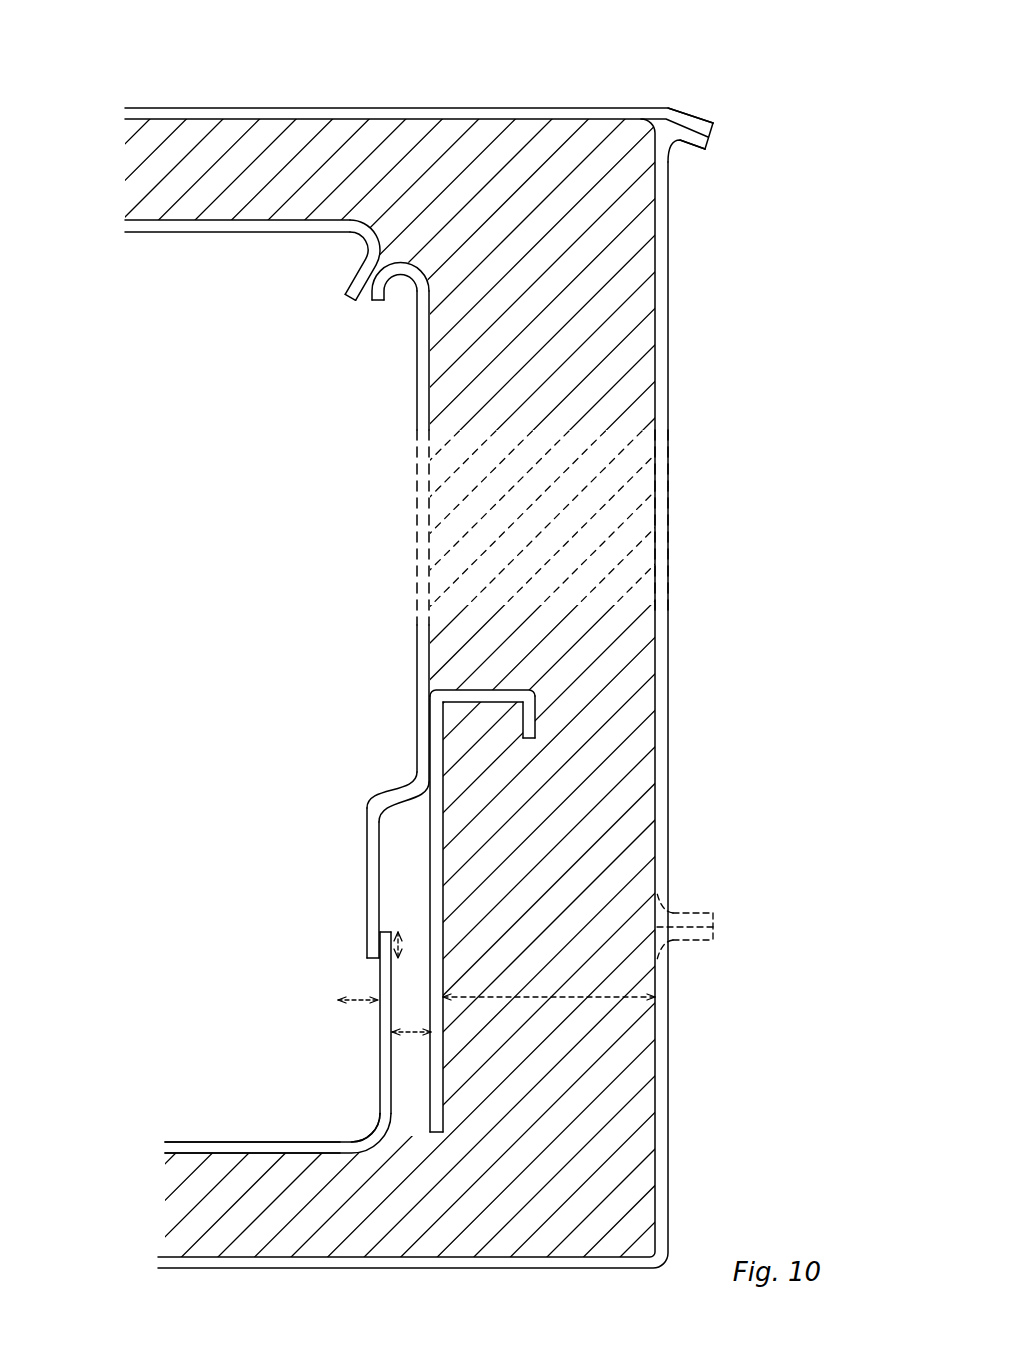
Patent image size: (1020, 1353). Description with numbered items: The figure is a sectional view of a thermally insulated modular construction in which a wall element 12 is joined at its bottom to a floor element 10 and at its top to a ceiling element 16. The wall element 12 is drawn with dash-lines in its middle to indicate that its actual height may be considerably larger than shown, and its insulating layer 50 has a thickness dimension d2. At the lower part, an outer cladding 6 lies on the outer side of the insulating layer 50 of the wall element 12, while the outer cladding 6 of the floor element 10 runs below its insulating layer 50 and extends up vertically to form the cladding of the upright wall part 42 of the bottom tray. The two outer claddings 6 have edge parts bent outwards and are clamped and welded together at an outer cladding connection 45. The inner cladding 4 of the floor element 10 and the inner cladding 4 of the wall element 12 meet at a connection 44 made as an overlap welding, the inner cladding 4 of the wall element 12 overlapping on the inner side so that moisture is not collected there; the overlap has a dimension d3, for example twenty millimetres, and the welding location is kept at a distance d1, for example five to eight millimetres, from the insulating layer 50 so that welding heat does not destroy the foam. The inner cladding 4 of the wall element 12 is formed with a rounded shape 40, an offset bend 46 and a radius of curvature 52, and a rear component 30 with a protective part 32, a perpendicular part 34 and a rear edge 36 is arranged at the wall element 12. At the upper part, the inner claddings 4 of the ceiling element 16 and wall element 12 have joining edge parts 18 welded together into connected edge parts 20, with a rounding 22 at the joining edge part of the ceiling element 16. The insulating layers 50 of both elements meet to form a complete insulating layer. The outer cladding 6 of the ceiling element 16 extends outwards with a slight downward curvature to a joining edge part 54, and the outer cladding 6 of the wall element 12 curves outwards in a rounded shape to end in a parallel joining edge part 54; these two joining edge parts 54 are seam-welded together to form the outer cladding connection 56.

The inner cladding 4 is at (197, 235).
The outer cladding 6 is at (278, 108).
The floor element 10 is at (200, 1141).
The wall element 12 is at (718, 368).
The ceiling element 16 is at (178, 235).
The joining edge part 18 is at (338, 303).
The connected edge parts 20 is at (338, 304).
The rounding at joining edge part of modular ceiling element 22 is at (425, 264).
The rear component at wall element 30 is at (476, 655).
The protective part of rear component 32 is at (445, 1084).
The perpendicular part of rear component 34 is at (525, 690).
The rear edge at rear component 36 is at (536, 725).
The rounded shape 40 is at (417, 772).
The upright wall part at floor element 42 is at (690, 1021).
The connection between floor element and another modular element 44 is at (333, 937).
The outer cladding connection 45 is at (730, 927).
The offset bend 46 is at (390, 797).
The insulating layer 50 is at (388, 158).
The radius of curvature 52 is at (350, 247).
The joining edge part at outer cladding 54 is at (705, 113).
The outer cladding connection between wall and ceiling element 56 is at (734, 152).
The distance between insulating layer and welding location d1 is at (384, 1016).
The dimension of insulating layer in wall element d2 is at (535, 997).
The dimension of overlap d3 is at (413, 942).